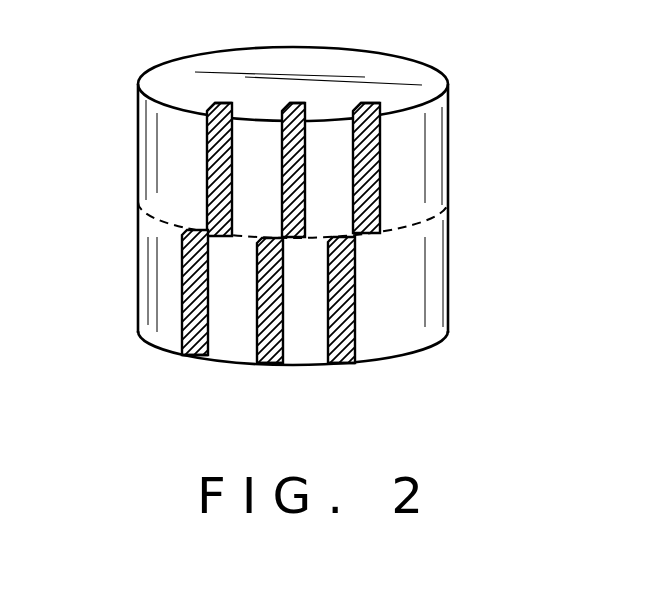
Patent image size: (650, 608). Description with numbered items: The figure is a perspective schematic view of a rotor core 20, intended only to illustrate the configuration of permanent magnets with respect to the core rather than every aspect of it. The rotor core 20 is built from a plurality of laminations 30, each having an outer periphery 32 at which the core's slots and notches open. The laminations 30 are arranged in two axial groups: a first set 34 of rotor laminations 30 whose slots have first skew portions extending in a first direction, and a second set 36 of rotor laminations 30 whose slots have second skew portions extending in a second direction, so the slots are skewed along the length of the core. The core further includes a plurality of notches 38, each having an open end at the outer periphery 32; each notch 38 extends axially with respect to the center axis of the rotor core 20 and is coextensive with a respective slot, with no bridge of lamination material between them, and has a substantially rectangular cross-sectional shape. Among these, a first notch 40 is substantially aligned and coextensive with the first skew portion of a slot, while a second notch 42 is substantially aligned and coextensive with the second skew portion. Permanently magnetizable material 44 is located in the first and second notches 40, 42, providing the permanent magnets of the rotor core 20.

The rotor core 20 is at (292, 207).
The laminations 30 is at (427, 158).
The outer periphery 32 is at (450, 125).
The first set of rotor laminations 34 is at (178, 163).
The second set of rotor laminations 36 is at (158, 304).
The notches 38 is at (206, 133).
The first notch 40 is at (281, 140).
The second notch 42 is at (263, 362).
The permanently magnetizable material 44 is at (373, 128).